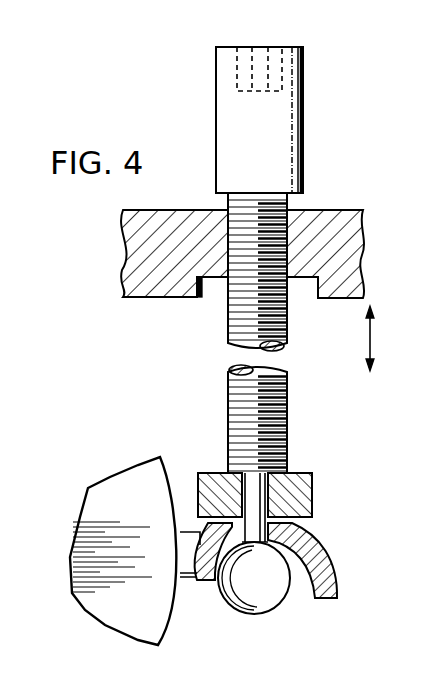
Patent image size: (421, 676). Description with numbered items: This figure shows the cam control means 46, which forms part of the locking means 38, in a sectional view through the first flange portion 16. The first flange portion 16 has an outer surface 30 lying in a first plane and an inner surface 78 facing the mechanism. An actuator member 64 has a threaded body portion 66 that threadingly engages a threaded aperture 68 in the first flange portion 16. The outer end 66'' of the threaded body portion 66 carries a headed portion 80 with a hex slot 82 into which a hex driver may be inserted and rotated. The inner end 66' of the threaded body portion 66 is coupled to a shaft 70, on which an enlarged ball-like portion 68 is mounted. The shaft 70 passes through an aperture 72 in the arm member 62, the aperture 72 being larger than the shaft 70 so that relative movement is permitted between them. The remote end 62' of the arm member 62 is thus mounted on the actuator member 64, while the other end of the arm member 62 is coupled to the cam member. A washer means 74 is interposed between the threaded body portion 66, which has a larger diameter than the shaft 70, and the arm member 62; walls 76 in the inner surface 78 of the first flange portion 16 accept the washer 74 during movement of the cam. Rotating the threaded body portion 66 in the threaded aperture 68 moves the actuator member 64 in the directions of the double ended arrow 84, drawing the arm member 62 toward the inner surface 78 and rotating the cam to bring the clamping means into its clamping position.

The locking means 38 is at (208, 35).
The hex slot 82 is at (238, 64).
The cam control means 46 is at (352, 59).
The actuator member 64 is at (308, 122).
The headed portion 80 is at (216, 100).
The outer end of threaded body portion 66'' is at (193, 177).
The threaded aperture / ball-like portion 68 is at (300, 200).
The first flange portion 16 is at (348, 210).
The outer surface 30 is at (140, 210).
The walls 76 is at (205, 300).
The inner surface 78 is at (336, 300).
The double ended arrow 84 is at (371, 352).
The threaded body portion 66 is at (296, 419).
The inner end of threaded body portion 66' is at (245, 536).
The washer means 74 is at (316, 476).
The aperture 72 is at (272, 513).
The shaft 70 is at (280, 524).
The arm member 62 is at (323, 560).
The remote end of arm member 62' is at (286, 578).